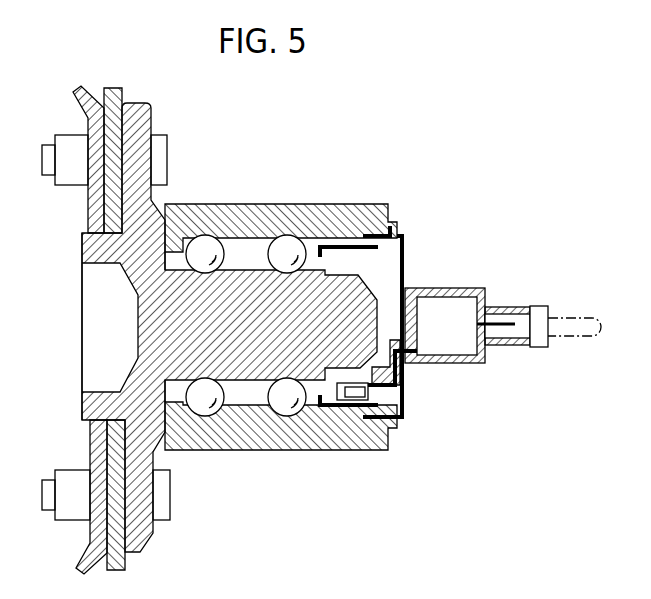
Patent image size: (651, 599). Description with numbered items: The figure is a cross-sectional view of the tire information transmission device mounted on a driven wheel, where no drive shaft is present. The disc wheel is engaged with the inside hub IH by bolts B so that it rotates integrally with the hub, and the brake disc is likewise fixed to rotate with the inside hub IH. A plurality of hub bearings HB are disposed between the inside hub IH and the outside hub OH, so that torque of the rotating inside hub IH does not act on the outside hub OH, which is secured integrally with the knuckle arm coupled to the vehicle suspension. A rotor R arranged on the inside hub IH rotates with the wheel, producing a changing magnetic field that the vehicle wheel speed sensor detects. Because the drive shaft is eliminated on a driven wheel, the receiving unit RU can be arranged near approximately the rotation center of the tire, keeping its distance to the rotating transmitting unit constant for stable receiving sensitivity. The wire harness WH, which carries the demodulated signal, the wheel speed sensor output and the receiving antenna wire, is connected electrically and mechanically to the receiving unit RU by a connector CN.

The bolts B is at (65, 178).
The inside hub IH is at (183, 257).
The hub bearings HB is at (277, 242).
The rotor R is at (362, 205).
The outside hub OH is at (280, 450).
The receiving unit RU is at (447, 363).
The connector CN is at (540, 307).
The wire harness WH is at (585, 310).